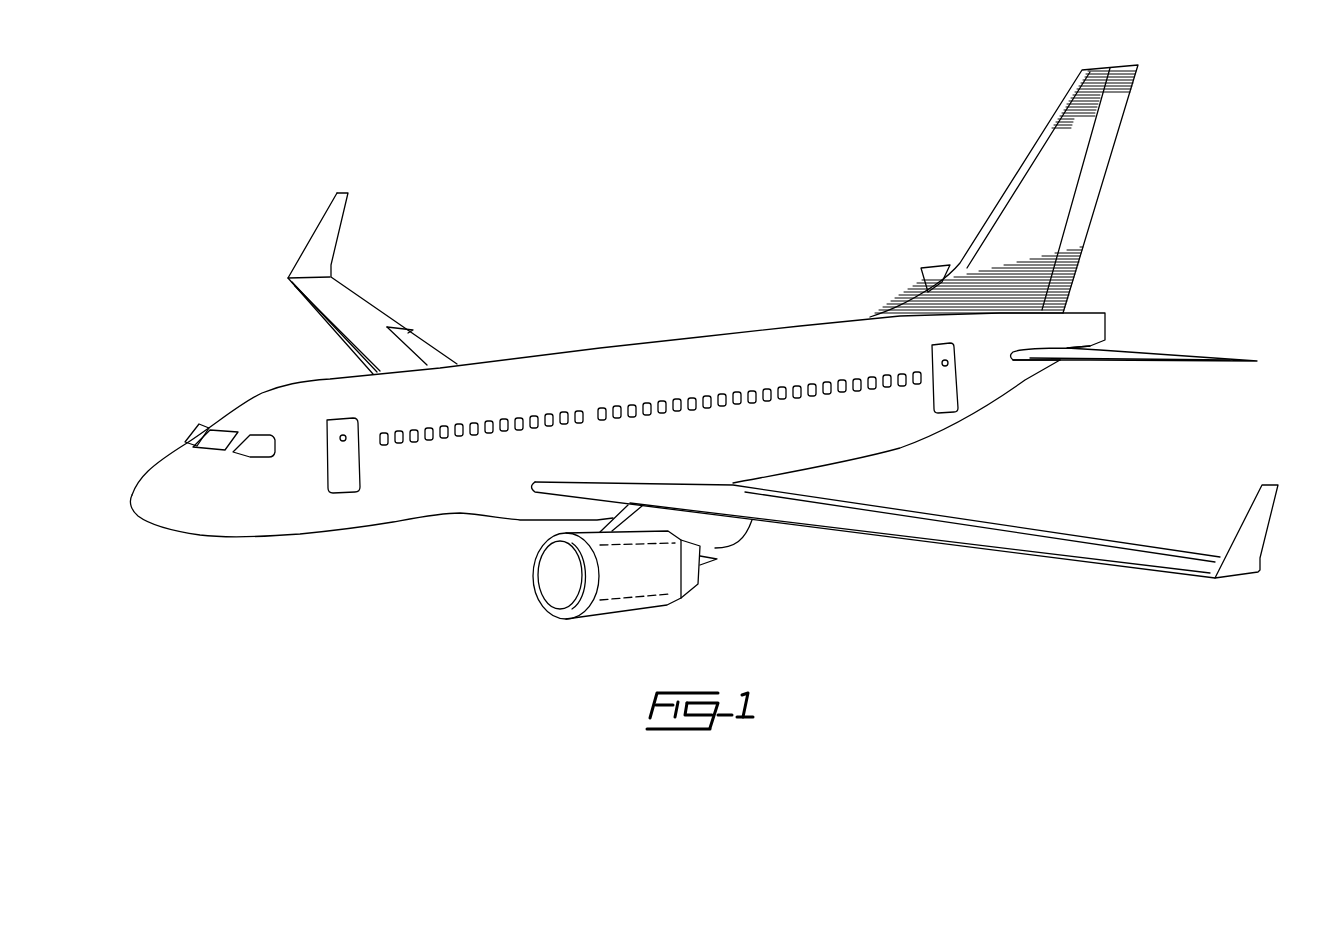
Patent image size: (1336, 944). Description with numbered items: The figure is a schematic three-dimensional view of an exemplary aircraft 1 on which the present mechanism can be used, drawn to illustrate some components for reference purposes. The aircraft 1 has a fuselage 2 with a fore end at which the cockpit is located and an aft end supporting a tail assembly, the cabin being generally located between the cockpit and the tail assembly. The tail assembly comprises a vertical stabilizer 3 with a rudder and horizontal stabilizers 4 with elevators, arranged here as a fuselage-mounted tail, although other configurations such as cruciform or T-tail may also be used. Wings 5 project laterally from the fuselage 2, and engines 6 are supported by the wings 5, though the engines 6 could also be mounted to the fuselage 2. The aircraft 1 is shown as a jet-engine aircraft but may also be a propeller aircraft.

The aircraft 1 is at (594, 270).
The fuselage 2 is at (405, 498).
The vertical stabilizer 3 is at (1037, 187).
The horizontal stabilizers 4 is at (935, 277).
The wings 5 is at (357, 322).
The engines 6 is at (660, 588).